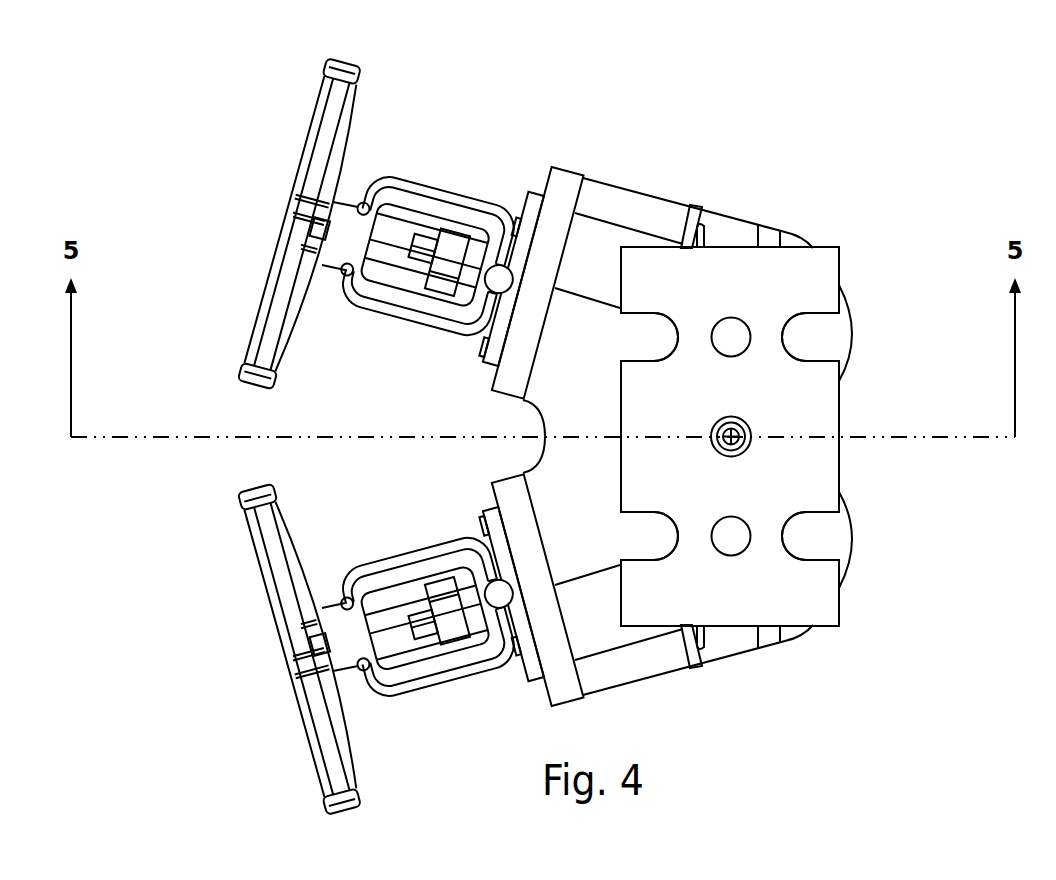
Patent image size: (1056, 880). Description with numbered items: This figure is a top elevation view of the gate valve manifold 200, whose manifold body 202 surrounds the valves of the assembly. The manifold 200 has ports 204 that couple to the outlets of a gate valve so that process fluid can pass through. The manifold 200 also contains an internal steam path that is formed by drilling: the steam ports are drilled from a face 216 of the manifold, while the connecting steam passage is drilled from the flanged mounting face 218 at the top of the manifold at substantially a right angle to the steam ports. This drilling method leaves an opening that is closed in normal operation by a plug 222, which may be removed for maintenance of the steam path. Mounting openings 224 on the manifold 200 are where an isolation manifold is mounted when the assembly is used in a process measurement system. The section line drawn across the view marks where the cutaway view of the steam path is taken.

The gate valve manifold 200 is at (866, 113).
The manifold body 202 is at (642, 191).
The ports 204 is at (748, 326).
The face 216 is at (840, 400).
The flanged mounting face 218 is at (721, 592).
The plug 222 is at (753, 447).
The mounting openings 224 is at (806, 314).